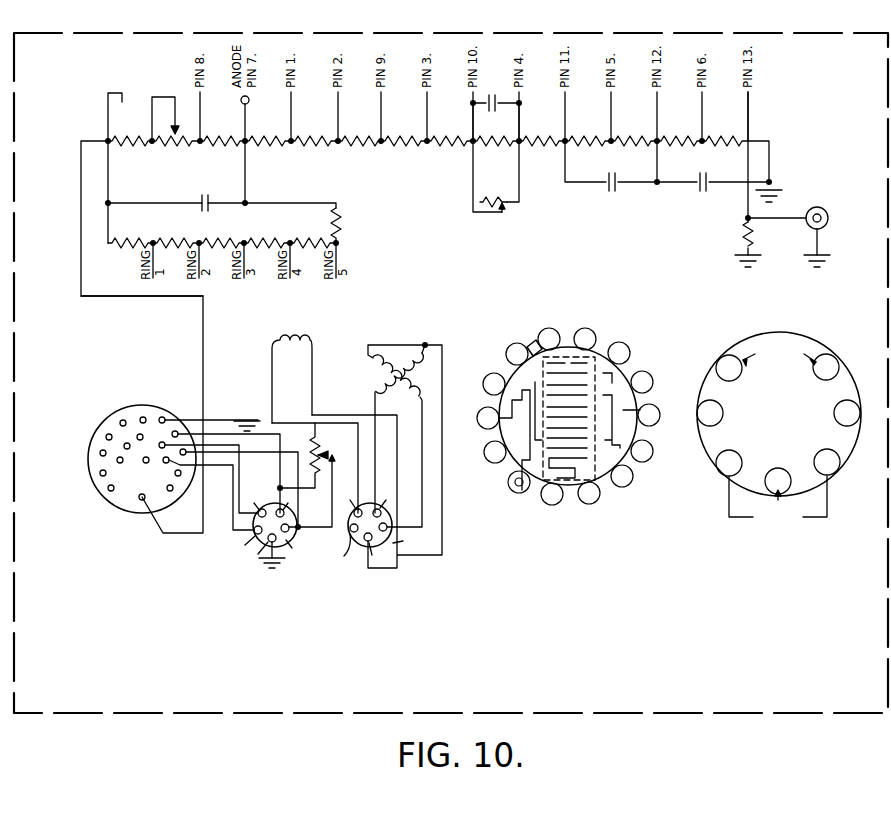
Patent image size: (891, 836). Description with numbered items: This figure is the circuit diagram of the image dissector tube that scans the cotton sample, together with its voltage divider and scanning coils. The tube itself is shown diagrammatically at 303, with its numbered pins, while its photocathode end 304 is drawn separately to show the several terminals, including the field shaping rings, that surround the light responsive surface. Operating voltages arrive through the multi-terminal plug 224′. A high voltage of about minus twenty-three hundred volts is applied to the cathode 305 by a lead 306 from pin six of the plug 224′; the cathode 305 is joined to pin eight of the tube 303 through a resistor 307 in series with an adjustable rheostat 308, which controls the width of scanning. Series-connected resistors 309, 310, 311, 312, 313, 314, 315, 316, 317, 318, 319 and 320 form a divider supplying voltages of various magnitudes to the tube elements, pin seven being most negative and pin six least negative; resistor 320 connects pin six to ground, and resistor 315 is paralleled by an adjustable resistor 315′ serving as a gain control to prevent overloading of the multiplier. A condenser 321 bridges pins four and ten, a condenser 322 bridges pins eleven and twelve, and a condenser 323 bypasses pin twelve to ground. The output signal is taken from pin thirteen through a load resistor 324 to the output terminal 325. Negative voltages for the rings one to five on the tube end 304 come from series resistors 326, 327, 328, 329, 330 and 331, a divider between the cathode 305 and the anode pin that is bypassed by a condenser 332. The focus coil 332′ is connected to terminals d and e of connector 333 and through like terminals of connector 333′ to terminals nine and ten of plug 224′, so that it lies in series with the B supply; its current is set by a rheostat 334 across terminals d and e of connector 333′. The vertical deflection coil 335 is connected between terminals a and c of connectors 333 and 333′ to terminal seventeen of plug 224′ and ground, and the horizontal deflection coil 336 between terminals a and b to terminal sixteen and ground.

The multi-terminal plug 224' is at (142, 447).
The image dissector tube 303 is at (598, 350).
The photocathode end of the tube 304 is at (820, 316).
The cathode 305 is at (743, 405).
The lead 306 is at (134, 308).
The resistor 307 is at (130, 130).
The adjustable rheostat 308 is at (167, 146).
The resistor 309 is at (222, 130).
The resistor 310 is at (268, 130).
The resistor 311 is at (314, 130).
The resistor 312 is at (359, 130).
The resistor 313 is at (404, 130).
The resistor 314 is at (450, 130).
The resistor 315 is at (496, 130).
The adjustable resistor 315' is at (493, 187).
The resistor 316 is at (542, 130).
The resistor 317 is at (588, 130).
The resistor 318 is at (634, 130).
The resistor 319 is at (679, 130).
The resistor 320 is at (725, 130).
The condenser 321 is at (487, 95).
The condenser 322 is at (611, 192).
The condenser 323 is at (704, 192).
The load resistor 324 is at (740, 237).
The output terminal 325 is at (827, 224).
The resistor 326 is at (130, 233).
The resistor 327 is at (176, 233).
The resistor 328 is at (221, 233).
The resistor 329 is at (267, 233).
The resistor 330 is at (313, 233).
The resistor 331 is at (339, 224).
The condenser 332 is at (201, 195).
The focus coil 332' is at (292, 364).
The connector 333 is at (360, 536).
The connector 333' is at (270, 511).
The rheostat 334 is at (315, 430).
The vertical deflection coil 335 is at (418, 365).
The horizontal deflection coil 336 is at (375, 388).